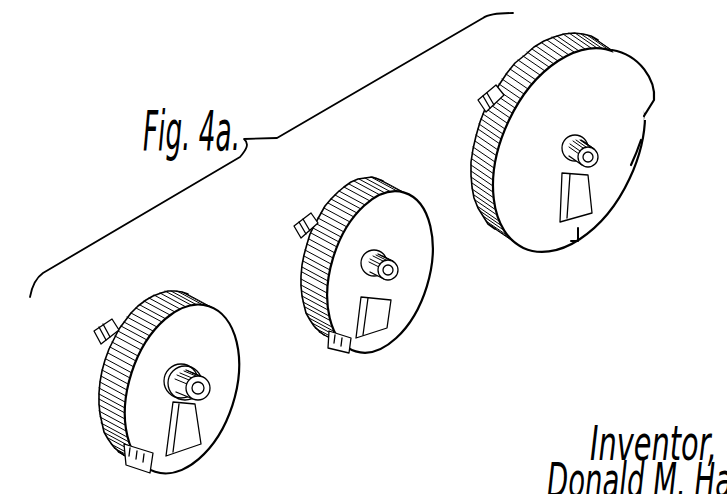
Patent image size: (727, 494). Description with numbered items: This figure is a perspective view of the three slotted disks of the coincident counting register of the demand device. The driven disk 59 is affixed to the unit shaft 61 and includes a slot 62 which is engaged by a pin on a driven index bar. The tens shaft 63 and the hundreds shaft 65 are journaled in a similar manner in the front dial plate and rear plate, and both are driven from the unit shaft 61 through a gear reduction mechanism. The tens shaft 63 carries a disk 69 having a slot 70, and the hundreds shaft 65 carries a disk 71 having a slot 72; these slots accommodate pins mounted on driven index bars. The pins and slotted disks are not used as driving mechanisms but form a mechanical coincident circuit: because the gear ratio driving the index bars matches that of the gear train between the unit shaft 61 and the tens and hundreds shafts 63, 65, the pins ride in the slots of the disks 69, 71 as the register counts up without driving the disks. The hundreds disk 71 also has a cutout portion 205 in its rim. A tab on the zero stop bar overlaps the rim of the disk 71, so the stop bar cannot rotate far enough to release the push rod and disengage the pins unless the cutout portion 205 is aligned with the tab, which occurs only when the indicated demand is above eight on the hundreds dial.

The driven disk 59 is at (215, 320).
The unit shaft 61 is at (112, 318).
The slot 62 is at (180, 434).
The tens shaft 63 is at (308, 211).
The disk 69 is at (411, 207).
The slot 70 is at (377, 322).
The hundreds shaft 65 is at (494, 84).
The disk 71 is at (607, 60).
The slot 72 is at (570, 200).
The cutout portion 205 is at (634, 162).